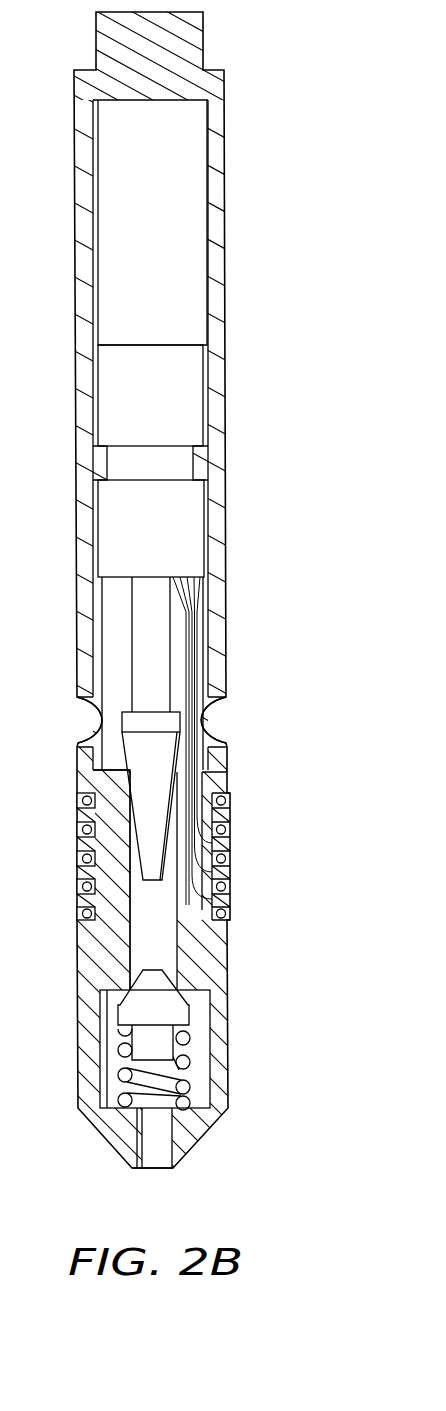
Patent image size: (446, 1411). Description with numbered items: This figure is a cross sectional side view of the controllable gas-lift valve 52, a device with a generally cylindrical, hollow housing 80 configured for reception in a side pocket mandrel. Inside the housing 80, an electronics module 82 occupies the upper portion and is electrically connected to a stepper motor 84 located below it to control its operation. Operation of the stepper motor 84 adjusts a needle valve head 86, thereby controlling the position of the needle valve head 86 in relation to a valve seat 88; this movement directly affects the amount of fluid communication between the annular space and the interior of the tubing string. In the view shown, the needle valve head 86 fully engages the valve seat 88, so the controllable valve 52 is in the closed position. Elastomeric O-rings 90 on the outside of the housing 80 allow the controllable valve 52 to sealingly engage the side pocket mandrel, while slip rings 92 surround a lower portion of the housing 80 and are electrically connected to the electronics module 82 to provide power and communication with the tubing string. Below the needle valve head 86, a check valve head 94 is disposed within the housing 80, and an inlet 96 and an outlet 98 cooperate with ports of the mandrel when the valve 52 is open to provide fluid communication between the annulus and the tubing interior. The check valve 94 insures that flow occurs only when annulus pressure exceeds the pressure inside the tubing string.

The controllable gas-lift valve 52 is at (256, 275).
The housing 80 is at (226, 117).
The electronics module 82 is at (172, 215).
The stepper motor 84 is at (147, 355).
The needle valve head 86 is at (160, 743).
The valve seat 88 is at (128, 774).
The O-rings 90 is at (225, 802).
The slip rings 92 is at (229, 870).
The check valve head 94 is at (160, 982).
The inlet 96 is at (94, 720).
The outlet 98 is at (150, 1170).